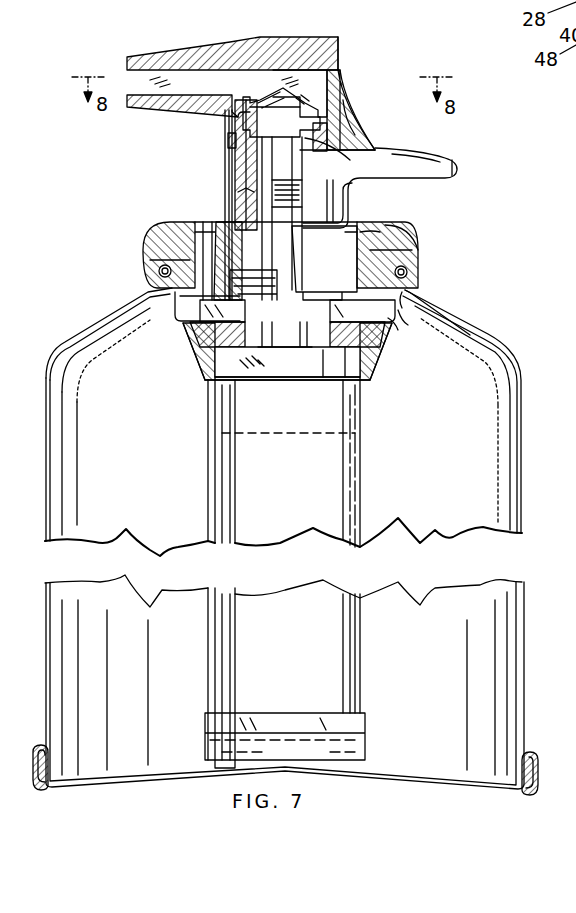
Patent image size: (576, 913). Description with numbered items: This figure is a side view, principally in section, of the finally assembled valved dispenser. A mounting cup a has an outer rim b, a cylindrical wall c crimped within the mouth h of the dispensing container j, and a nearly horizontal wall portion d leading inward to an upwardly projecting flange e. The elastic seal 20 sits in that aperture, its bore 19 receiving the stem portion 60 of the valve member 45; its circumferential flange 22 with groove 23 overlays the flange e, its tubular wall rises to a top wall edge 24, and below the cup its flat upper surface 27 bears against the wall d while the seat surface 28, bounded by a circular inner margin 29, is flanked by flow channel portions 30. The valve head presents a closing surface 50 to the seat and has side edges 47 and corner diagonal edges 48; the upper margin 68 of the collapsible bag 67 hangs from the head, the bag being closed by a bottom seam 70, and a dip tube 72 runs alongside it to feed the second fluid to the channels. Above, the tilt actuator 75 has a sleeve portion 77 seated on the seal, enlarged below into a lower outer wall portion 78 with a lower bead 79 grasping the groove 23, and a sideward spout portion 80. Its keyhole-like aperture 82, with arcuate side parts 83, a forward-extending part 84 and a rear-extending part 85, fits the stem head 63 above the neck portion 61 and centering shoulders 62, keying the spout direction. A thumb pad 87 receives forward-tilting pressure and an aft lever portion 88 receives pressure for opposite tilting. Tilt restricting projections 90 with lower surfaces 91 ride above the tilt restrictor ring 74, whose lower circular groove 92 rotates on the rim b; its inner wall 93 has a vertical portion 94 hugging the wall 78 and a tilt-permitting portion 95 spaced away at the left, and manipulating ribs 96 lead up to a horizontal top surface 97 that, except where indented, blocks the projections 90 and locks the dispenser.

The spout portion 80 is at (137, 57).
The tilt actuator 75 is at (348, 52).
The thumb pad 87 is at (342, 70).
The rear-extending part 85 is at (322, 100).
The top wall edge 24 is at (345, 120).
The centering shoulders 62 is at (352, 140).
The neck portion 61 is at (368, 149).
The aft lever portion 88 is at (447, 155).
The stem head 63 is at (260, 100).
The arcuate side parts 83 is at (302, 117).
The forward-extending part 84 is at (250, 89).
The keyhole-like aperture 82 is at (237, 118).
The bore 19 is at (262, 165).
The elastic seal 20 is at (243, 197).
The stem portion 60 is at (226, 152).
The sleeve portion 77 is at (231, 180).
The circumferential flange 22 is at (228, 228).
The groove 23 is at (268, 283).
The lower outer wall portion 78 is at (325, 279).
The tilt restricting projections 90 is at (302, 220).
The lower surfaces 91 is at (304, 227).
The tilt restrictor ring 74 is at (424, 224).
The manipulating ribs 96 is at (420, 238).
The vertical portion 94 is at (405, 262).
The outer rim b is at (408, 270).
The horizontal top surface 97 is at (366, 233).
The tilt-permitting portion 95 is at (168, 238).
The inner wall 93 is at (188, 262).
The lower bead 79 is at (207, 306).
The upwardly projecting flange e is at (237, 313).
The horizontal wall portion d is at (382, 315).
The mouth h is at (422, 291).
The cylindrical wall c is at (404, 303).
The mounting cup a is at (410, 312).
The flat upper surface 27 is at (398, 325).
The flow channel portions 30 is at (205, 340).
The seat surface 28 is at (205, 362).
The circular inner margin 29 is at (214, 380).
The valve member 45 is at (285, 340).
The side edges 47 is at (300, 377).
The valve head closing surface 50 is at (323, 380).
The corner diagonal edges 48 is at (350, 368).
The upper margin 68 is at (360, 408).
The bag 67 is at (345, 472).
The dip tube 72 is at (220, 497).
The lower circular groove 92 is at (150, 292).
The dispensing container j is at (524, 405).
The bottom seam 70 is at (352, 748).